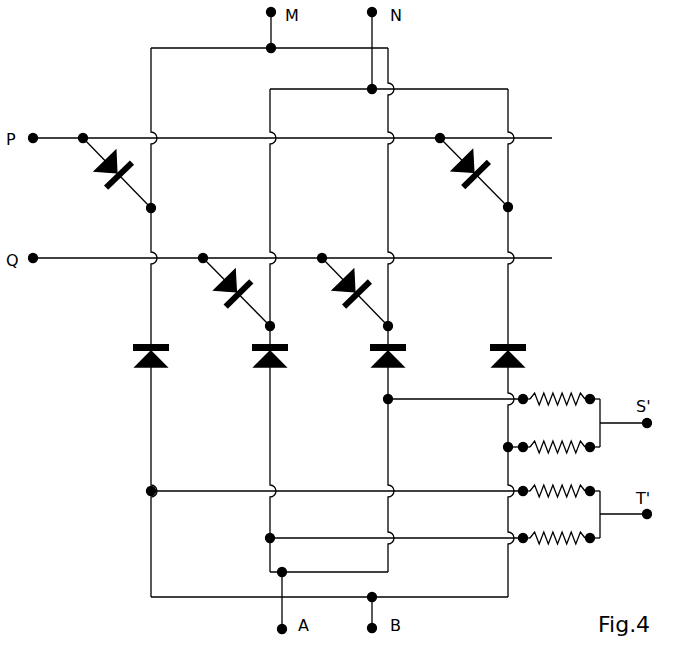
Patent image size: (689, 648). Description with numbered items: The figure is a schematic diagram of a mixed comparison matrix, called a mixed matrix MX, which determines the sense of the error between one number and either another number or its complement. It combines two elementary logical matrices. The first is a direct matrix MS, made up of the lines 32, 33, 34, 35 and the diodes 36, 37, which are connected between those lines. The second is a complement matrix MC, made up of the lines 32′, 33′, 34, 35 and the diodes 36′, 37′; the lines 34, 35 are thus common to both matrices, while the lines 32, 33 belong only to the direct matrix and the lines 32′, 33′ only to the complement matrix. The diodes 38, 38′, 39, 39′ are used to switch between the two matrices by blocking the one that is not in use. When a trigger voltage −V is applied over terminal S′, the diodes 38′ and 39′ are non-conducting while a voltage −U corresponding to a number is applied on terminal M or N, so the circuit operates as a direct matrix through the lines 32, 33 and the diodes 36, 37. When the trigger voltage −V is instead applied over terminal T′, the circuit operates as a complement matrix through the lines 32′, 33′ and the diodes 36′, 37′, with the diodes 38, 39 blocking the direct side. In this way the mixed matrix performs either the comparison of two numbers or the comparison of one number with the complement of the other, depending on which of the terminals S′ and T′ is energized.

The line 32 is at (174, 322).
The line 33 is at (294, 330).
The line 32' is at (413, 310).
The line 33' is at (534, 343).
The line 34 is at (292, 117).
The line 35 is at (292, 242).
The diode 36 is at (111, 173).
The diode 37 is at (231, 292).
The diode 36' is at (347, 292).
The diode 37' is at (468, 173).
The diode 38 is at (167, 361).
The diode 39 is at (285, 361).
The diode 38' is at (404, 361).
The diode 39' is at (524, 361).